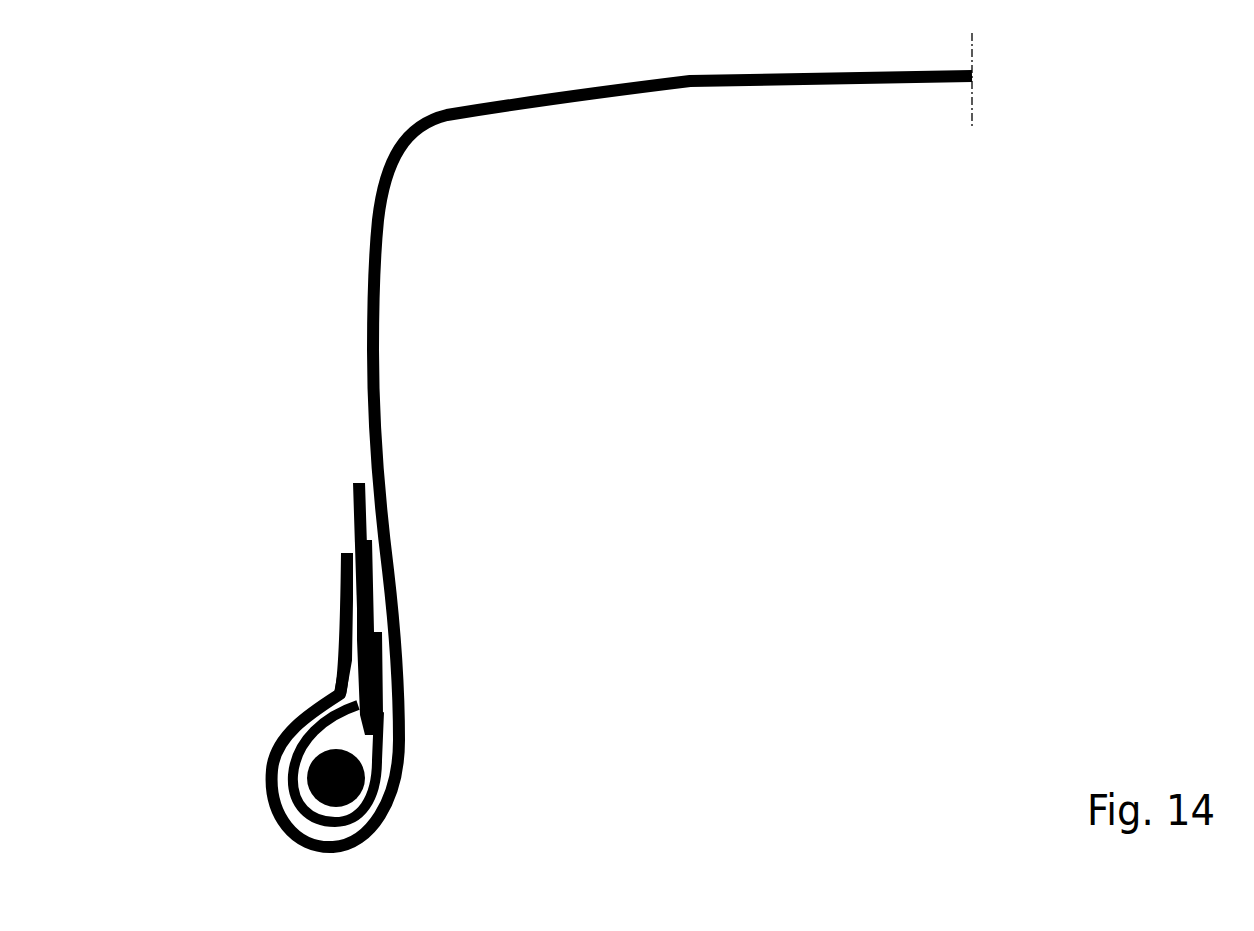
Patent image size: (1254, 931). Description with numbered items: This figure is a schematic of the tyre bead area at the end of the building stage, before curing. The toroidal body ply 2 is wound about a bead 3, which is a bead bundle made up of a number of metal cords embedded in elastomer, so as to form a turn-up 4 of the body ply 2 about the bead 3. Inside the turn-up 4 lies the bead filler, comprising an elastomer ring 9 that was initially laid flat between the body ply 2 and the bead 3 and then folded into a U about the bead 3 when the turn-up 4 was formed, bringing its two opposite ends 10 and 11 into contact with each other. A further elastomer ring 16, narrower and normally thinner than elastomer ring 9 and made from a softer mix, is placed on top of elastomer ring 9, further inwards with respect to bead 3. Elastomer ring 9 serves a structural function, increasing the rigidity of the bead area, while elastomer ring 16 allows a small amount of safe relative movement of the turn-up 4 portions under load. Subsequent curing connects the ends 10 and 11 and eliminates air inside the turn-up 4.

The body ply 2 is at (379, 356).
The bead 3 is at (363, 777).
The turn-up 4 is at (422, 558).
The elastomer ring 9 is at (290, 802).
The end of elastomer ring 10 is at (356, 482).
The end of elastomer ring 11 is at (351, 631).
The further elastomer ring 16 is at (361, 603).